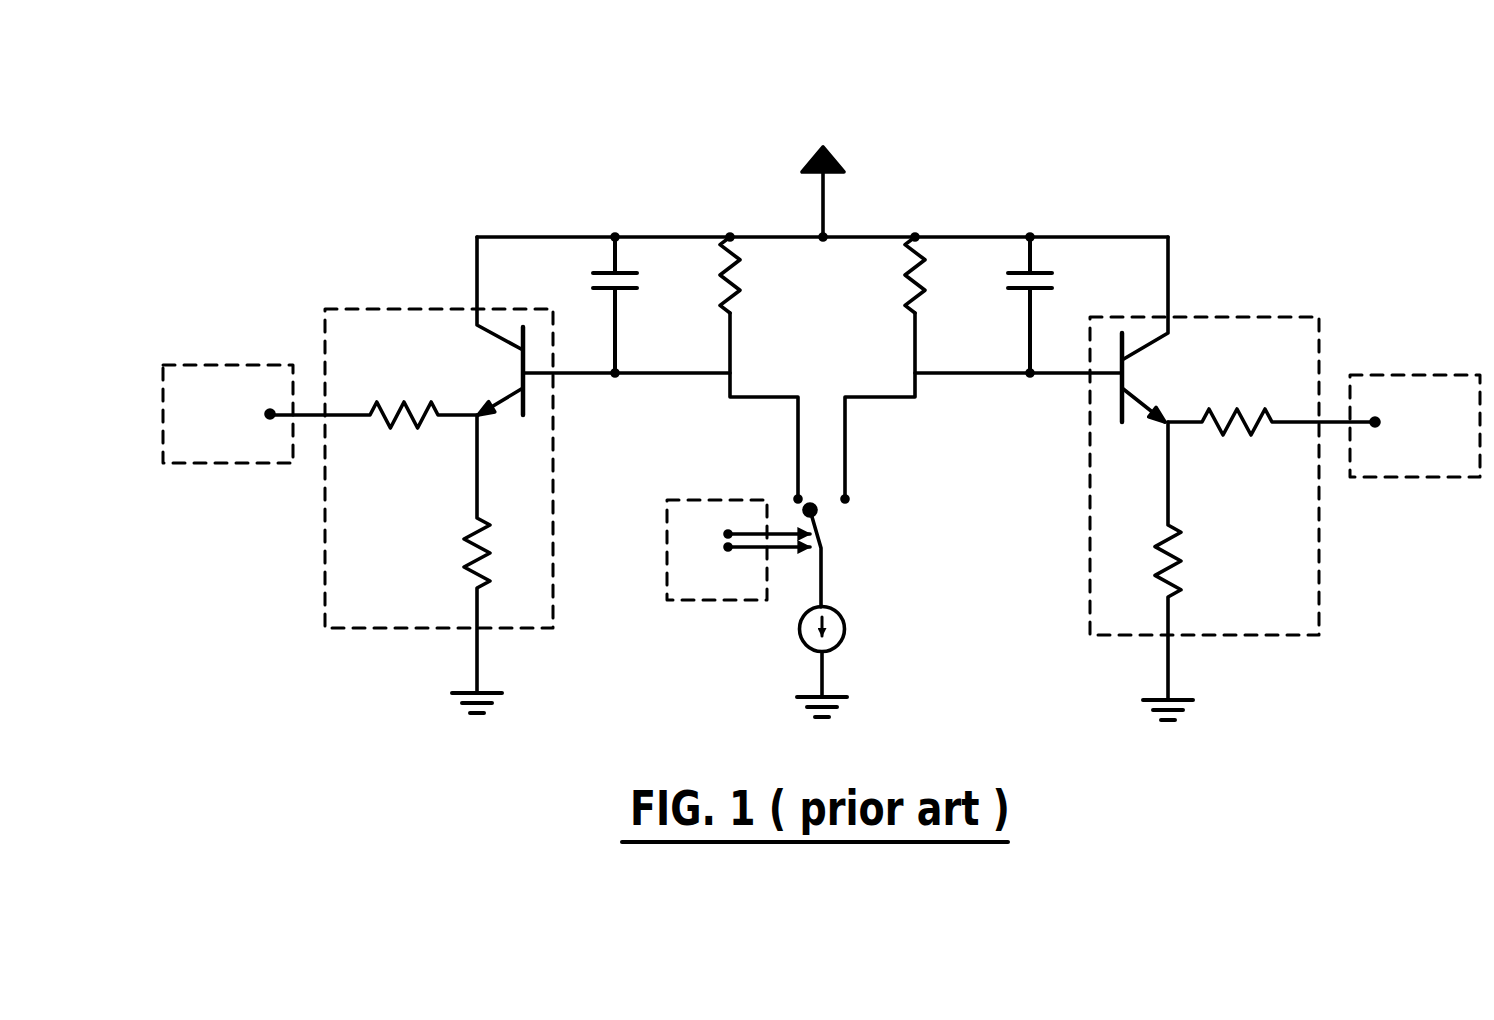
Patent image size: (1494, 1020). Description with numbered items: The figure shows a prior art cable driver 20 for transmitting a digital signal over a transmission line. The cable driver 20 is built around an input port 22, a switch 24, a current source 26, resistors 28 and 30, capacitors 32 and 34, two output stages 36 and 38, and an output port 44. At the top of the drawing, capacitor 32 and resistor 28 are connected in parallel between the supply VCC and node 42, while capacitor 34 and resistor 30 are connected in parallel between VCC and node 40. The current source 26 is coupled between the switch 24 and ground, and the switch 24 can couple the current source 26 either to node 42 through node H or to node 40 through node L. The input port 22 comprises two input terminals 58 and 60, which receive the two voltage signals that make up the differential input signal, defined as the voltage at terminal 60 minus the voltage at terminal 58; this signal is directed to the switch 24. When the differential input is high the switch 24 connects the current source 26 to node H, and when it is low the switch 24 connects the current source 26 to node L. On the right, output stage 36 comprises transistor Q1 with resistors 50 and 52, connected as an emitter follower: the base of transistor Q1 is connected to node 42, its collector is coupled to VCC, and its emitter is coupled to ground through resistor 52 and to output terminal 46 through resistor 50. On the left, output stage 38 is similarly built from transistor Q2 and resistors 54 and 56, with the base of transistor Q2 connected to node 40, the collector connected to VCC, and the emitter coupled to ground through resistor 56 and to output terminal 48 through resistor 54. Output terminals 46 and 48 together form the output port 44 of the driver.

The prior art cable driver 20 is at (1266, 214).
The input port 22 is at (715, 555).
The switch 24 is at (828, 541).
The current source 26 is at (840, 646).
The resistor 28 is at (922, 304).
The resistor 30 is at (736, 308).
The capacitor 32 is at (1044, 296).
The capacitor 34 is at (621, 292).
The output stage 36 is at (1306, 650).
The output stage 38 is at (365, 642).
The node 40 is at (734, 378).
The node 42 is at (908, 374).
The output port 44 is at (258, 470).
The output terminal 46 is at (1380, 422).
The output terminal 48 is at (263, 420).
The resistor 50 is at (1258, 412).
The resistor 52 is at (1176, 572).
The resistor 54 is at (430, 406).
The resistor 56 is at (522, 586).
The input terminal 58 is at (726, 526).
The input terminal 60 is at (722, 553).
The transistor Q1 is at (1152, 373).
The transistor Q2 is at (490, 358).